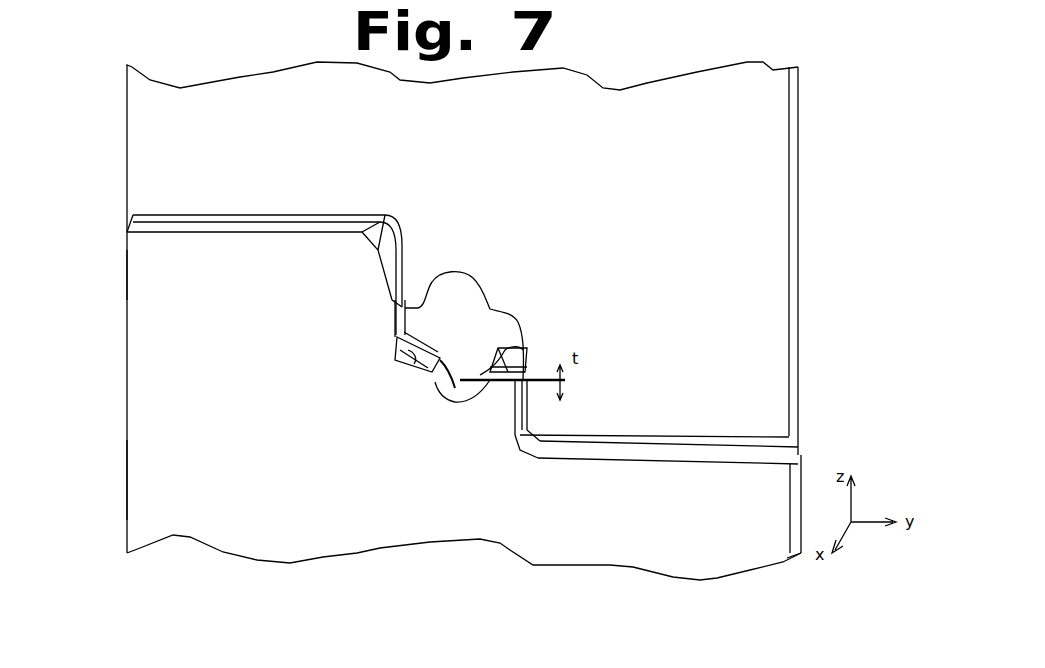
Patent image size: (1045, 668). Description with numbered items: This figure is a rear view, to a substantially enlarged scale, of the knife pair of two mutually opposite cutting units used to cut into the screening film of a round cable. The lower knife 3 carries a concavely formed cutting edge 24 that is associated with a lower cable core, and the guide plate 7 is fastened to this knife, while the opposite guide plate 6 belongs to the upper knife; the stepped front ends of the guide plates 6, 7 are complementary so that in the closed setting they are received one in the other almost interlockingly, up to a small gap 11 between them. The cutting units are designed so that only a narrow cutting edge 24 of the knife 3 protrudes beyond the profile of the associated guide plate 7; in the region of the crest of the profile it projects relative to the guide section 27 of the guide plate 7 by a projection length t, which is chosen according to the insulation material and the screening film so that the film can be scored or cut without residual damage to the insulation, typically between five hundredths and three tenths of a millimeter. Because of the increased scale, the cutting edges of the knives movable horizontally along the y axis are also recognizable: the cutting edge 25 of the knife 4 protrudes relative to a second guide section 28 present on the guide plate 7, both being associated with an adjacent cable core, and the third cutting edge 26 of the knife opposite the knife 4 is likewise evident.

The lower knife 3 is at (575, 435).
The knife 4 is at (362, 220).
The guide plate 6 is at (147, 116).
The guide plate 7 is at (152, 463).
The gap 11 is at (152, 283).
The cutting edge 24 is at (467, 385).
The cutting edge 25 is at (397, 351).
The third cutting edge 26 is at (523, 347).
The guide section 27 is at (455, 388).
The second guide section 28 is at (405, 373).